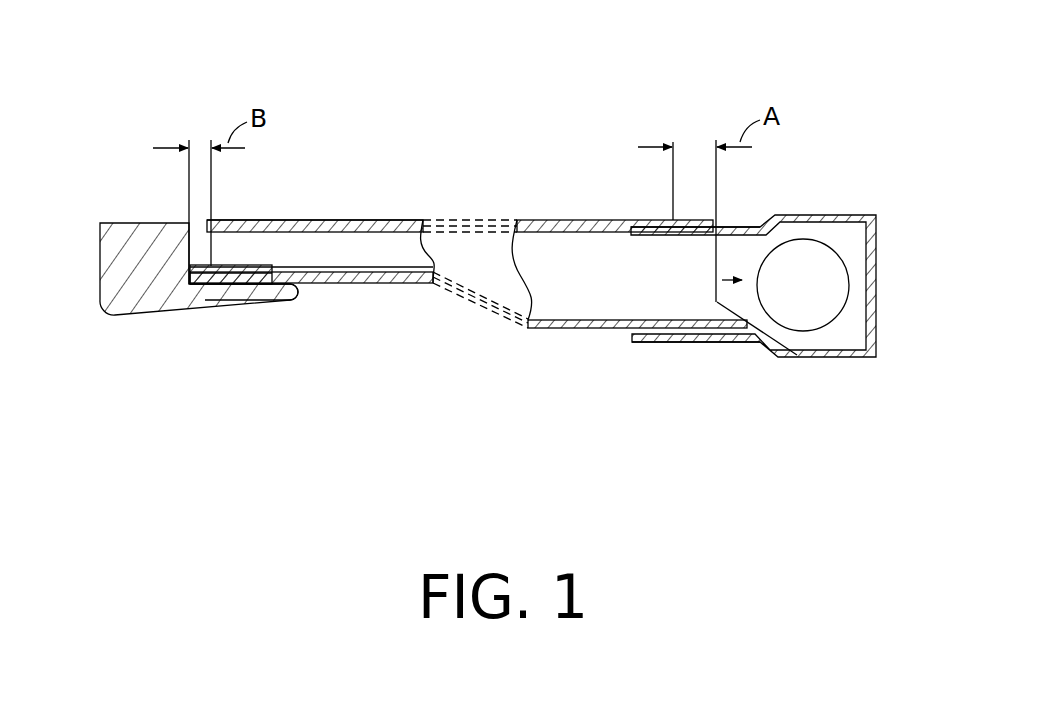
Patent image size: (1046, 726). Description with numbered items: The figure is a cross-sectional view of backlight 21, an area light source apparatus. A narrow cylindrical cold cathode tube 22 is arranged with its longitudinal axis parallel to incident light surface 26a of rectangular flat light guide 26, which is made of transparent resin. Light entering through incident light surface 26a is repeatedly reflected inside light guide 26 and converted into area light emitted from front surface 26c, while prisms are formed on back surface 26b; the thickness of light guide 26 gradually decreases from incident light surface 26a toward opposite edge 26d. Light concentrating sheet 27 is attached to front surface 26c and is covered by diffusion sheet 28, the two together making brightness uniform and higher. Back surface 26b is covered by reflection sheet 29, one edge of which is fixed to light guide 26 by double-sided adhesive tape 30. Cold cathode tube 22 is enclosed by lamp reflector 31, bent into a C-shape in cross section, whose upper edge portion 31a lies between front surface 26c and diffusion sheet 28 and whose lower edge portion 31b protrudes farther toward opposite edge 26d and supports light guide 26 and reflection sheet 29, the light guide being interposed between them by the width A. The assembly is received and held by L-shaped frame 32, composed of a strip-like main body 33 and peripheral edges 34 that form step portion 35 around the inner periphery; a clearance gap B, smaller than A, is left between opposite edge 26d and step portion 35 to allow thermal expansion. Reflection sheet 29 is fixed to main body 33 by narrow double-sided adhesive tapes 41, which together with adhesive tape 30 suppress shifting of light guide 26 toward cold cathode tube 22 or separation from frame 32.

The backlight 21 is at (639, 64).
The cold cathode tube 22 is at (819, 339).
The light guide 26 is at (460, 300).
The incident light surface 26a is at (797, 355).
The back surface 26b is at (615, 329).
The front surface 26c is at (571, 219).
The opposite edge 26d is at (232, 270).
The light concentrating sheet 27 is at (257, 220).
The diffusion sheet 28 is at (310, 220).
The reflection sheet 29 is at (547, 329).
The double-sided adhesive tape 30 is at (203, 285).
The lamp reflector 31 is at (774, 276).
The upper edge portion 31a is at (692, 226).
The lower edge portion 31b is at (692, 343).
The frame 32 is at (128, 318).
The main body 33 is at (297, 303).
The peripheral edges 34 is at (102, 232).
The step portion 35 is at (262, 293).
The double-sided adhesive tapes 41 is at (237, 285).